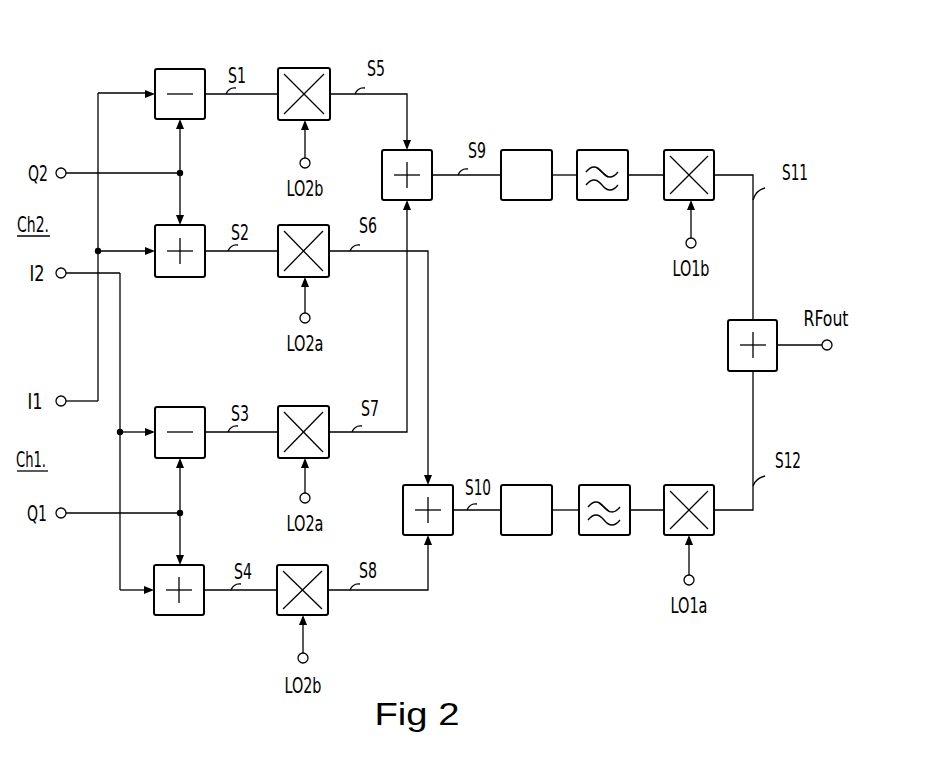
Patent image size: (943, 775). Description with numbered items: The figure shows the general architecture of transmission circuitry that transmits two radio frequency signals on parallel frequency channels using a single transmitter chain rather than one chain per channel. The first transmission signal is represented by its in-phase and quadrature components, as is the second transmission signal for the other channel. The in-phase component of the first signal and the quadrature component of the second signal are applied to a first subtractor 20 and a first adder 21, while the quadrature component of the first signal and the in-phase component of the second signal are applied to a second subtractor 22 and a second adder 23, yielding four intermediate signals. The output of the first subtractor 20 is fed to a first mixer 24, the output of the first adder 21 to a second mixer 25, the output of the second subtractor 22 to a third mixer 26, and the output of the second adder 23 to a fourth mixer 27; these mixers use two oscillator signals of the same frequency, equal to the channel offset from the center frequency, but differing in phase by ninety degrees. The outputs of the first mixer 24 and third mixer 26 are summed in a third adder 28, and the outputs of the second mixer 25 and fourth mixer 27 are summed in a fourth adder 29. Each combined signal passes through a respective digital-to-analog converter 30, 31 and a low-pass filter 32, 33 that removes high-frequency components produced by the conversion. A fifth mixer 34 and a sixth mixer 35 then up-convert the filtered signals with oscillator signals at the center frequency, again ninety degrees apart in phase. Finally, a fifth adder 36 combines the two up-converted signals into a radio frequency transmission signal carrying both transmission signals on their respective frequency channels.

The first subtractor 20 is at (185, 69).
The first adder 21 is at (190, 277).
The second subtractor 22 is at (183, 407).
The second adder 23 is at (172, 615).
The first mixer 24 is at (308, 68).
The second mixer 25 is at (286, 277).
The third mixer 26 is at (302, 406).
The fourth mixer 27 is at (284, 615).
The third adder 28 is at (420, 150).
The fourth adder 29 is at (446, 535).
The digital-to-analog converter 30 is at (527, 150).
The digital-to-analog converter 31 is at (522, 485).
The low-pass filter 32 is at (595, 150).
The low-pass filter 33 is at (592, 485).
The fifth mixer 34 is at (682, 150).
The sixth mixer 35 is at (676, 485).
The fifth adder 36 is at (764, 371).